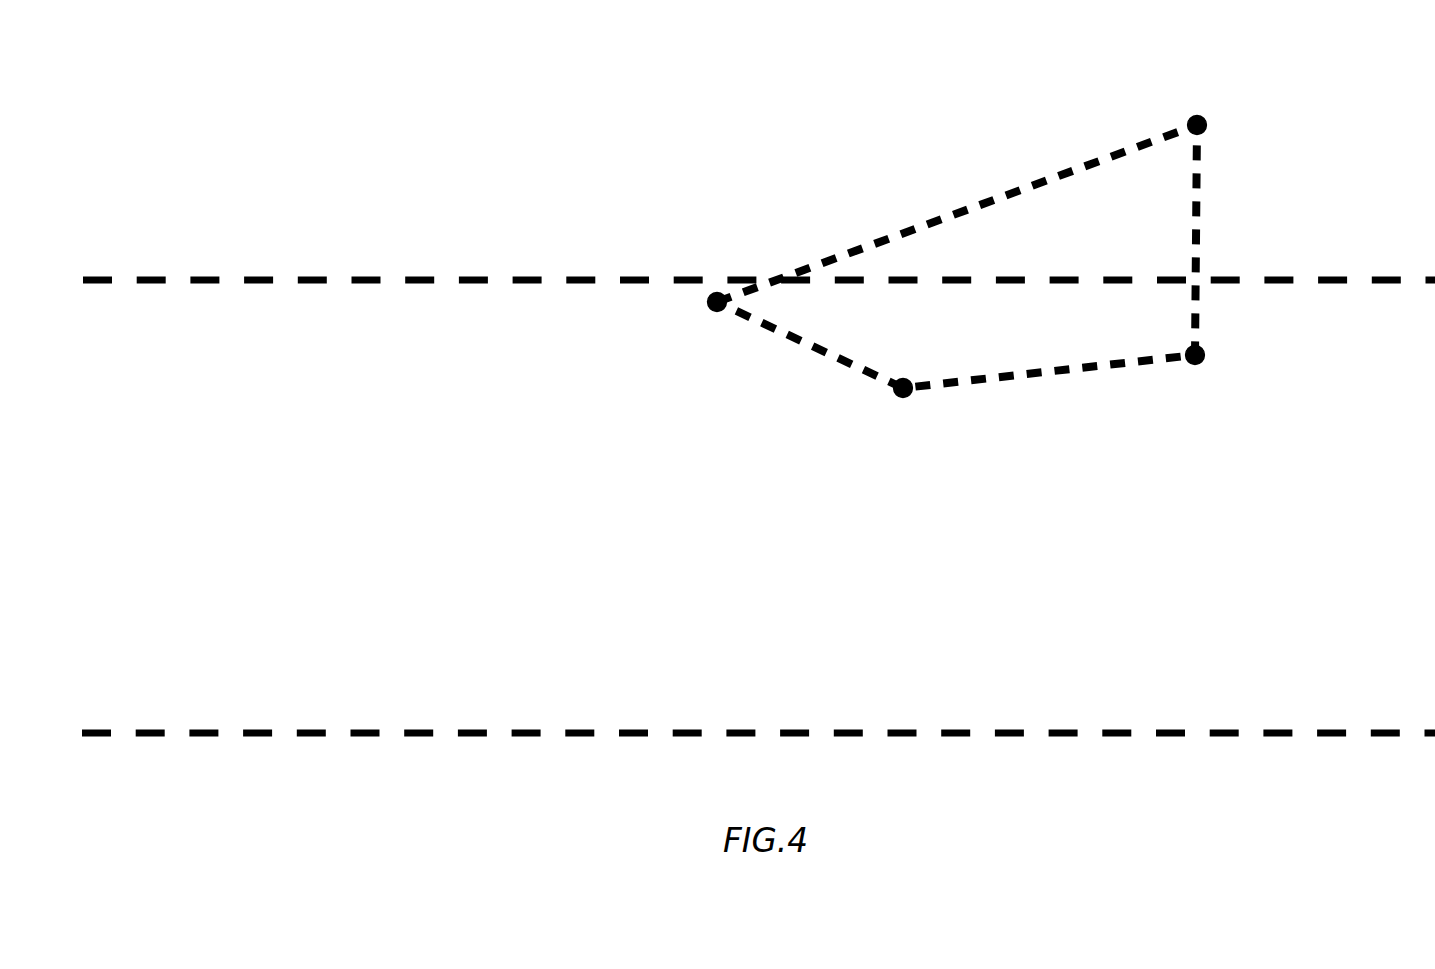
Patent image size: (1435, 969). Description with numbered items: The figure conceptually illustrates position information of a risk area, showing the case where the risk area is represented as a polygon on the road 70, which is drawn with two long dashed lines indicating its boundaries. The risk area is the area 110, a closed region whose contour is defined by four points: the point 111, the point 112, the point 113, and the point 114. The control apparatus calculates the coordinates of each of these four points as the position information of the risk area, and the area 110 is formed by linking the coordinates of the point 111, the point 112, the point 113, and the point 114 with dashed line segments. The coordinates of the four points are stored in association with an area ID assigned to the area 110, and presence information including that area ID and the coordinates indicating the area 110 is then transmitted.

The road 70 is at (305, 688).
The area 110 is at (1038, 178).
The point 111 is at (714, 308).
The point 112 is at (905, 395).
The point 113 is at (1197, 362).
The point 114 is at (1200, 117).